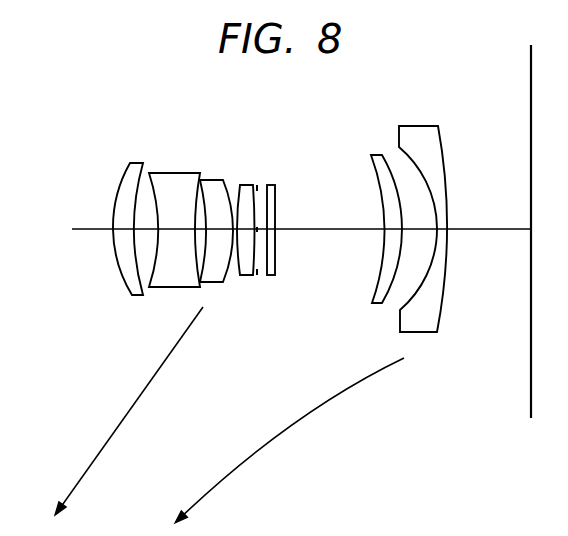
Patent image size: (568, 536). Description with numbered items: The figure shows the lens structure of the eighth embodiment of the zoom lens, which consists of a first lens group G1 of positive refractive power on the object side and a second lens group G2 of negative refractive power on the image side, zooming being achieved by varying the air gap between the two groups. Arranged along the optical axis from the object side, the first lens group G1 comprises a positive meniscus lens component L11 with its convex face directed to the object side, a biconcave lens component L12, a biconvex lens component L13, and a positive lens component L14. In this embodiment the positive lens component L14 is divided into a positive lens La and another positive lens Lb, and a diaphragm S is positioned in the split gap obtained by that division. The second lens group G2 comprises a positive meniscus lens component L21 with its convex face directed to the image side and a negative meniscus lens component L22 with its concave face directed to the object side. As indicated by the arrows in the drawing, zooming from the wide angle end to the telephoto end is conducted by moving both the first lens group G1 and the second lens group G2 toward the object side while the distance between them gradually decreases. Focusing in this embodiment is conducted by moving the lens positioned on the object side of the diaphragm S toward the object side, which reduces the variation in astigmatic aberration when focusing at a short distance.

The positive meniscus lens component L11 is at (138, 162).
The biconcave lens component L12 is at (172, 172).
The biconvex lens component L13 is at (213, 180).
The positive lens component L14 is at (245, 134).
The positive lens La is at (246, 185).
The positive lens Lb is at (270, 185).
The diaphragm S is at (258, 188).
The first lens group G1 is at (117, 297).
The positive meniscus lens component L21 is at (376, 155).
The negative meniscus lens component L22 is at (419, 126).
The second lens group G2 is at (356, 347).